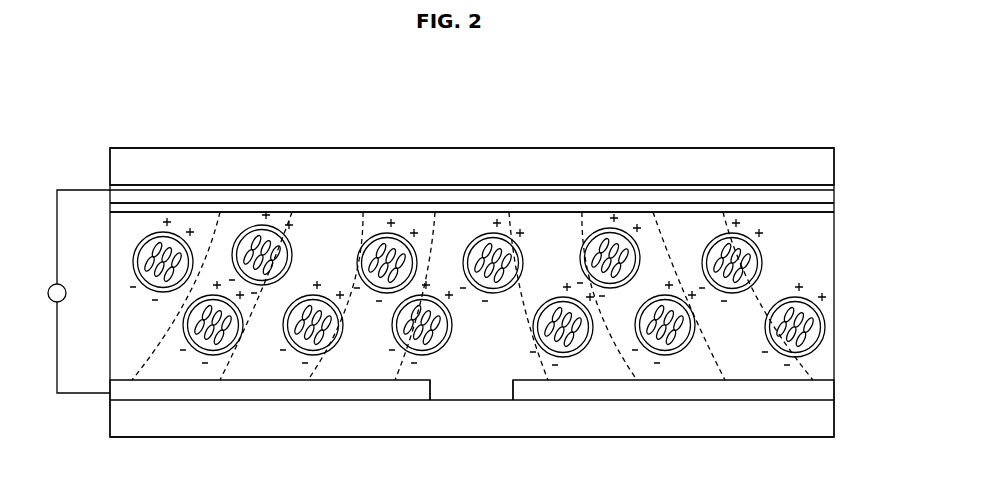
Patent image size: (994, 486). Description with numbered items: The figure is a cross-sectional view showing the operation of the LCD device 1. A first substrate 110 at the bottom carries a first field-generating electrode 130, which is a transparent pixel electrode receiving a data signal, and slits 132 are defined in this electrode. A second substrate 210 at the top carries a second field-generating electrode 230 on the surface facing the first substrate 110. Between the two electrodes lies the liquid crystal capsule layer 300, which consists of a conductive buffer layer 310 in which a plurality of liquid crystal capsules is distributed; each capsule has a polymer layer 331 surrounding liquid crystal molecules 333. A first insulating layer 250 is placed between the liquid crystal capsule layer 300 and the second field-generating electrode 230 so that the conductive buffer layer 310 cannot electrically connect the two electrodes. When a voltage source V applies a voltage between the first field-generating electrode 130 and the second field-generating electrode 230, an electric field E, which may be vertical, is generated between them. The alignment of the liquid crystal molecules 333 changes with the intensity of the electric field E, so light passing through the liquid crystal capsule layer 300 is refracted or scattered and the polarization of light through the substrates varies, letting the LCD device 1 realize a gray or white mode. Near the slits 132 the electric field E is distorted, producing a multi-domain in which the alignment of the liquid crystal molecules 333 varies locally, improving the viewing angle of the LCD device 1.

The LCD device 1 is at (140, 100).
The first substrate 110 is at (117, 427).
The first field-generating electrode 130 is at (116, 394).
The slit 132 is at (460, 391).
The second substrate 210 is at (110, 158).
The second field-generating electrode 230 is at (117, 189).
The first insulating layer 250 is at (117, 207).
The liquid crystal capsule layer 300 is at (874, 215).
The conductive buffer layer 310 is at (834, 220).
The polymer layer 331 is at (782, 260).
The liquid crystal molecules 333 is at (745, 266).
The electric field E is at (437, 232).
The voltage source V is at (79, 291).